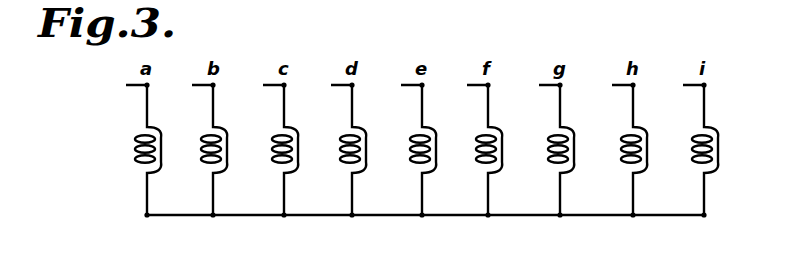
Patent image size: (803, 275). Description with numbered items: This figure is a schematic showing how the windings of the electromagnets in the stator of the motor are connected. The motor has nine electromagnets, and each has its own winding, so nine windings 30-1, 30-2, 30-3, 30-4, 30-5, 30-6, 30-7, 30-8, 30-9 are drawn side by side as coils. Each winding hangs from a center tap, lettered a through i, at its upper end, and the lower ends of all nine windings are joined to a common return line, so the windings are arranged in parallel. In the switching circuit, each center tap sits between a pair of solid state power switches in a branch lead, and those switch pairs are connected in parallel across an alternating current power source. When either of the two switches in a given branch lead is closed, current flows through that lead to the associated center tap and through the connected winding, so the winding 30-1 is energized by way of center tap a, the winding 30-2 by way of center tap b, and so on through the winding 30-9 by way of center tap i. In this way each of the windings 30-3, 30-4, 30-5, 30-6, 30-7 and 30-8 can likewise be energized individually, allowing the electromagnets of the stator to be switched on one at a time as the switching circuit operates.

The winding 30-1 is at (137, 138).
The winding 30-2 is at (203, 138).
The winding 30-3 is at (274, 138).
The winding 30-4 is at (342, 138).
The winding 30-5 is at (412, 138).
The winding 30-6 is at (478, 138).
The winding 30-7 is at (550, 138).
The winding 30-8 is at (623, 138).
The winding 30-9 is at (694, 138).